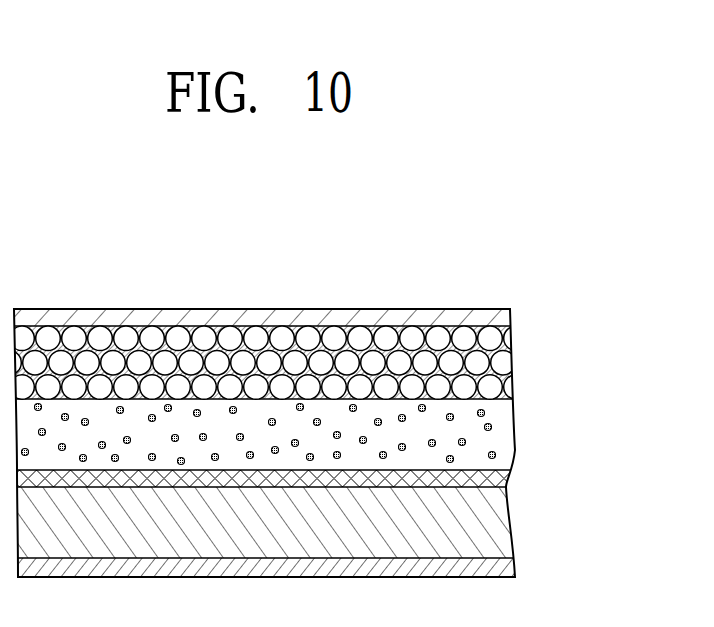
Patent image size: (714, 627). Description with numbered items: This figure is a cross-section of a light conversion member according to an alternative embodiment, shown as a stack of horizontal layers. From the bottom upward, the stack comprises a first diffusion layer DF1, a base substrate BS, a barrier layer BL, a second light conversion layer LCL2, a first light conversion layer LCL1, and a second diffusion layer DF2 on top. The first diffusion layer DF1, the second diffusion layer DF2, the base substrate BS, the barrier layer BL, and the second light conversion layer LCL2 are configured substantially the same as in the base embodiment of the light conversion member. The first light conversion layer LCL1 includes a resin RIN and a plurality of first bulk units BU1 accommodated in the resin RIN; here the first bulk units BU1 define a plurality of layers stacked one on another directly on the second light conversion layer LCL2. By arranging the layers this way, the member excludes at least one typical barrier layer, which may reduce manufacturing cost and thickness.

The second diffusion layer DF2 is at (506, 317).
The first bulk units BU1 is at (492, 340).
The resin RIN is at (490, 368).
The first light conversion layer LCL1 is at (337, 362).
The second light conversion layer LCL2 is at (503, 433).
The barrier layer BL is at (502, 478).
The base substrate BS is at (502, 518).
The first diffusion layer DF1 is at (503, 568).